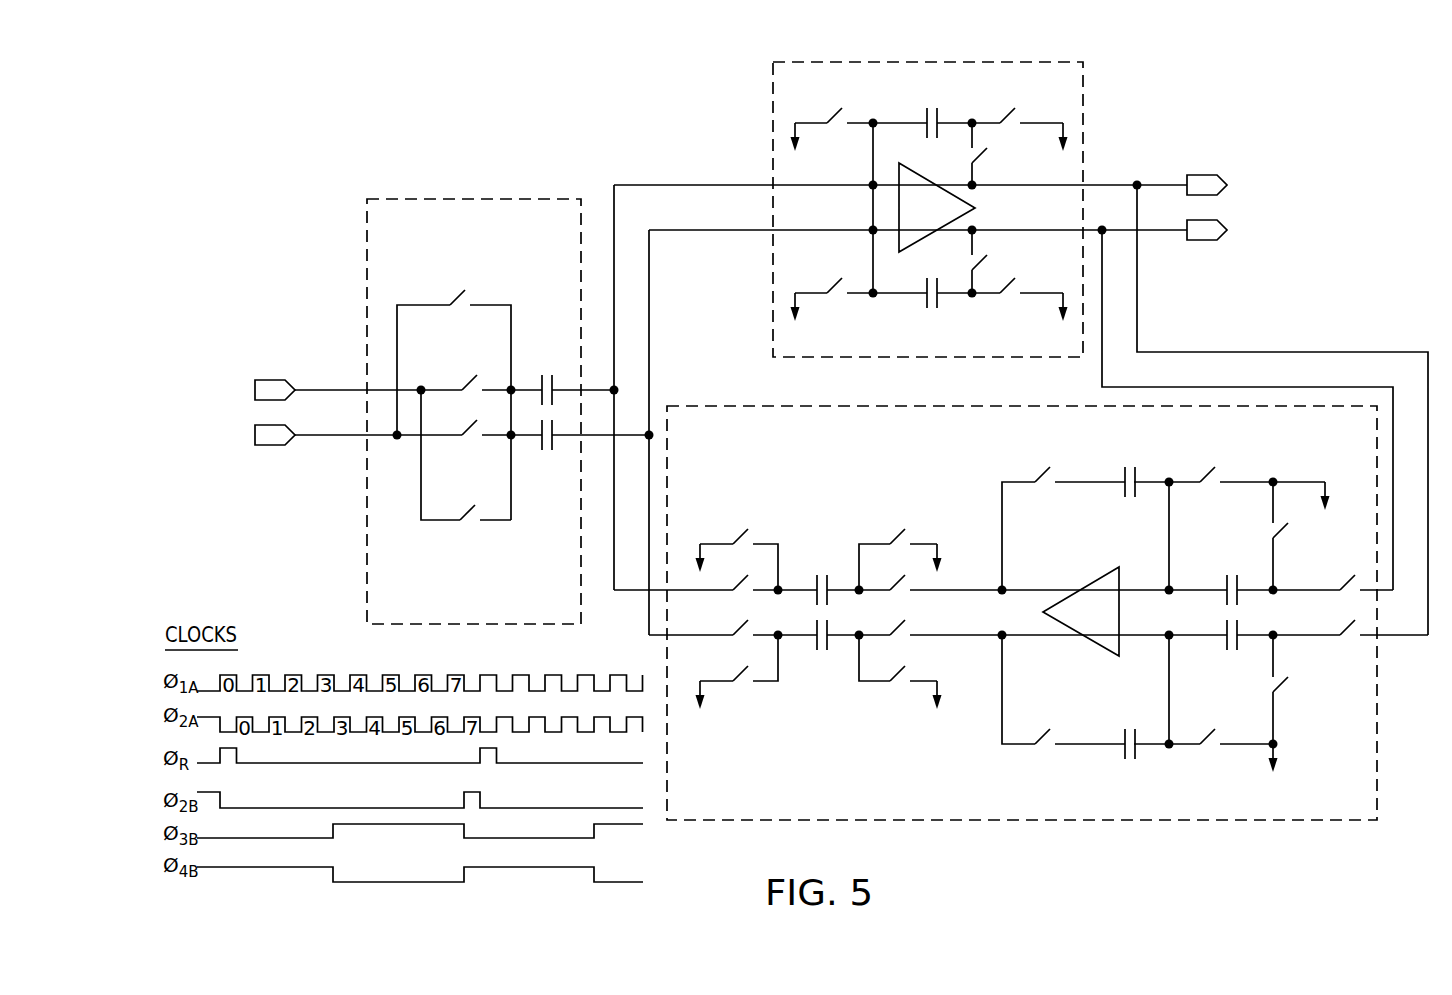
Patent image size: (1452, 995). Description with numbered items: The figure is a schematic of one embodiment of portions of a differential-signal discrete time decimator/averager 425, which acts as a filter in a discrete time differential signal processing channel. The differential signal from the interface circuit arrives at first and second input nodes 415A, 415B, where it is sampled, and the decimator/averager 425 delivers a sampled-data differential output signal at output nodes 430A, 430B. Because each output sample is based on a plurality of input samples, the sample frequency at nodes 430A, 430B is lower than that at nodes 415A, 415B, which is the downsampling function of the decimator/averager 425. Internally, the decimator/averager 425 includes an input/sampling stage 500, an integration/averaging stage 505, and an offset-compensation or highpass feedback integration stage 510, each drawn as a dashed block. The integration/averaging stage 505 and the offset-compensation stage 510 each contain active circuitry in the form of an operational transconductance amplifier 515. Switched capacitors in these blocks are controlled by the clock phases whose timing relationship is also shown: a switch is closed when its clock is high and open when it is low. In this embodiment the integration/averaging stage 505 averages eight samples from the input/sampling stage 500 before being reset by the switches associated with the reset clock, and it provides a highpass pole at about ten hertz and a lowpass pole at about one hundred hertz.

The decimator/averager 425 is at (295, 80).
The input/sampling stage 500 is at (473, 199).
The integration/averaging stage 505 is at (1083, 98).
The offset-compensation stage 510 is at (1021, 405).
The operational transconductance amplifier 515 is at (898, 208).
The node 415A is at (326, 390).
The node 415B is at (330, 437).
The node 430A is at (1157, 184).
The node 430B is at (1166, 233).